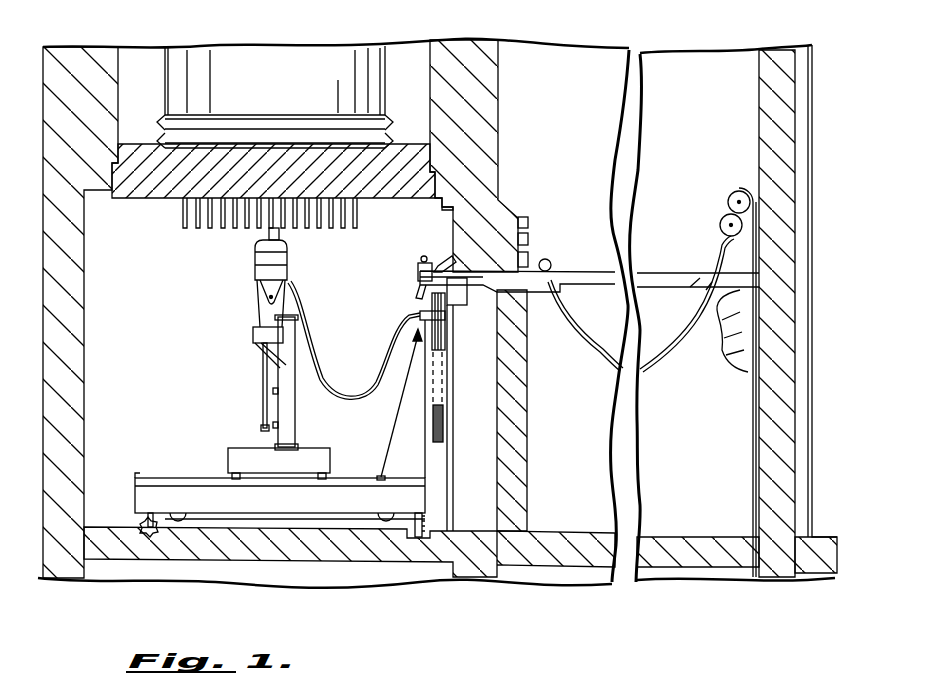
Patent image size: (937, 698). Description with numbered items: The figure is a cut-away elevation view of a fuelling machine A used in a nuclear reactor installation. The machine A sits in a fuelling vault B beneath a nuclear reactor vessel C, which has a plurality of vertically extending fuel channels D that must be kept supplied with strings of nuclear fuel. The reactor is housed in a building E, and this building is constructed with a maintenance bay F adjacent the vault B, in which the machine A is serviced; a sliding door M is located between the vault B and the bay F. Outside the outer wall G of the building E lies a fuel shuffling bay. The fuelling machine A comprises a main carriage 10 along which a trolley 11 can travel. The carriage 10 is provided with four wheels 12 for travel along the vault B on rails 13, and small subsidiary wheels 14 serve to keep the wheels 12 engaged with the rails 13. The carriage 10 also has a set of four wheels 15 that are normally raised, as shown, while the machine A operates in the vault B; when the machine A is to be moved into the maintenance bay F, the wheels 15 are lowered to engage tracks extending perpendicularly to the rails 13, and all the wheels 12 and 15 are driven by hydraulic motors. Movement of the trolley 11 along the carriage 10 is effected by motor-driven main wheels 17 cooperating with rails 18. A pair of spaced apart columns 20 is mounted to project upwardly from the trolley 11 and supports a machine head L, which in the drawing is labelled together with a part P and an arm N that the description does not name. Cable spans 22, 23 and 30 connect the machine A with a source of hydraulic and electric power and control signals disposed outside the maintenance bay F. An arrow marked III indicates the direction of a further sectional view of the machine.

The fuelling vault B is at (372, 215).
The nuclear reactor vessel C is at (203, 58).
The reactor building E is at (488, 104).
The outer wall G is at (772, 137).
The sliding door M is at (512, 412).
The maintenance bay F is at (725, 487).
The fuel channels D is at (183, 230).
The pump head P is at (262, 240).
The machine head L is at (306, 236).
The fuelling machine A is at (252, 290).
The inclined arm N is at (256, 358).
The columns 20 is at (294, 418).
The trolley 11 is at (228, 462).
The main wheels 17 is at (318, 485).
The main carriage 10 is at (170, 480).
The wheels 12 is at (135, 515).
The wheels 15 is at (182, 522).
The rails 13 is at (150, 528).
The subsidiary wheels 14 is at (145, 532).
The rails 18 is at (360, 484).
The cable span 22 is at (342, 392).
The cable span 23 is at (440, 342).
The cable span 30 is at (593, 352).
The view direction arrow III is at (170, 371).